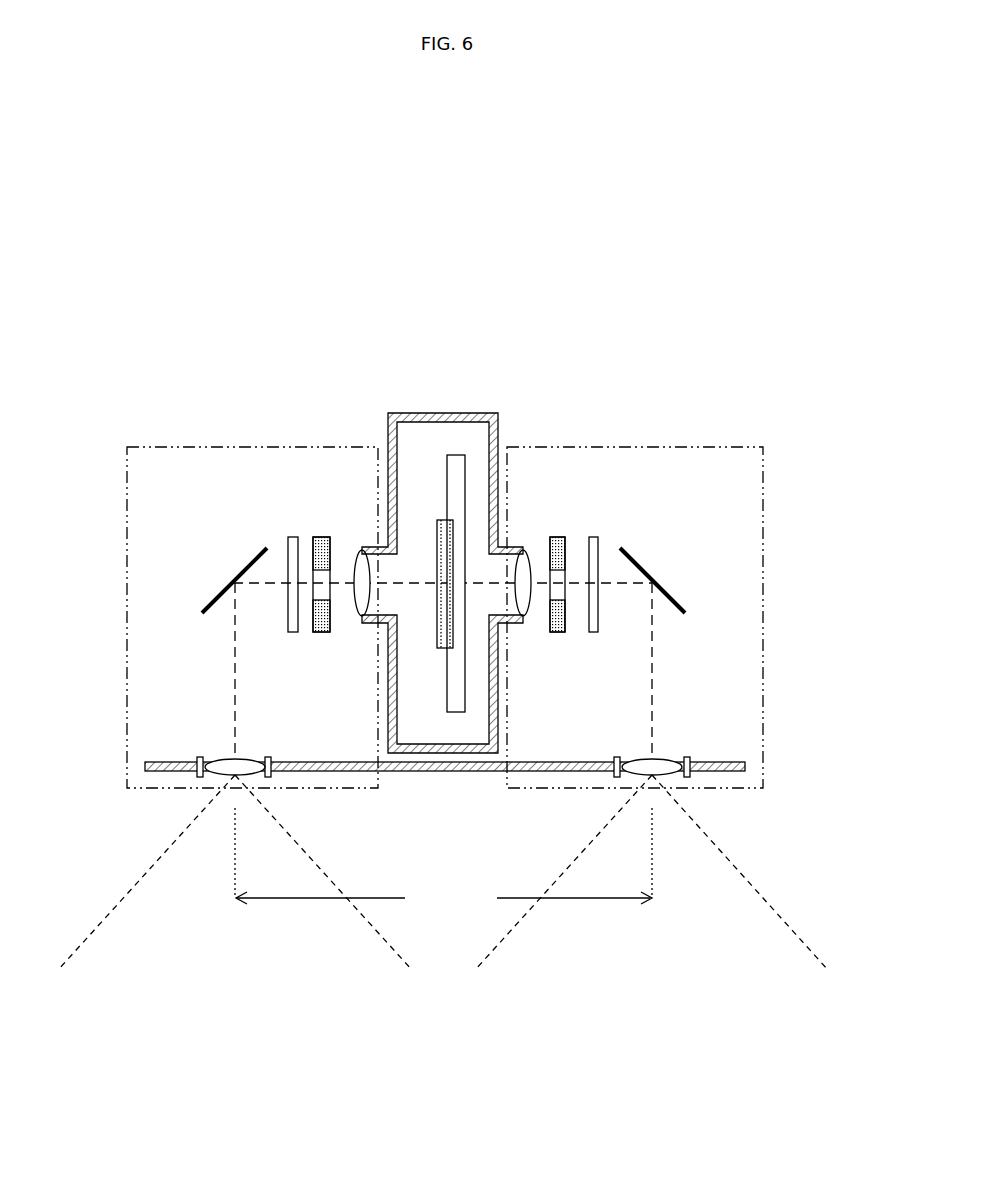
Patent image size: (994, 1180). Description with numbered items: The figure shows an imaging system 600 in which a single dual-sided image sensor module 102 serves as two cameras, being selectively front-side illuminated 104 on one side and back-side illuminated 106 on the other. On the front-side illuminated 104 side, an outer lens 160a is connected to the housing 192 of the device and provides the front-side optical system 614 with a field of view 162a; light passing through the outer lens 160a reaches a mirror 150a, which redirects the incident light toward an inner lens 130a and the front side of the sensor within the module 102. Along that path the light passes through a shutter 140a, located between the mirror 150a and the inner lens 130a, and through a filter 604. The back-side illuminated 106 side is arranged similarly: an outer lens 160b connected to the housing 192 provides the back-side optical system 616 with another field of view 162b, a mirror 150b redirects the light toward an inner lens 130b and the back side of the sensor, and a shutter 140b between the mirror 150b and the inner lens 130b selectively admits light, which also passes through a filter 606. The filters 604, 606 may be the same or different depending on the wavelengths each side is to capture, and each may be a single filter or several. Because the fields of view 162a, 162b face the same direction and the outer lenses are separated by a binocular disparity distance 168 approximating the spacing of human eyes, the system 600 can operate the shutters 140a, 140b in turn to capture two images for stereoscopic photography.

The imaging system 600 is at (227, 326).
The dual-sided image sensor module 102 is at (524, 404).
The front-side illuminated side 104 is at (126, 435).
The back-side illuminated side 106 is at (726, 434).
The inner lens 130a is at (362, 550).
The inner lens 130b is at (525, 550).
The shutter 140a is at (316, 537).
The shutter 140b is at (558, 537).
The mirror 150a is at (232, 583).
The mirror 150b is at (642, 568).
The outer lens 160a is at (217, 762).
The outer lens 160b is at (665, 762).
The field of view 162a is at (213, 1000).
The field of view 162b is at (631, 1002).
The binocular disparity distance 168 is at (443, 879).
The housing 192 is at (395, 772).
The filter 604 is at (293, 632).
The filter 606 is at (593, 632).
The front-side optical system 614 is at (127, 722).
The back-side optical system 616 is at (763, 720).